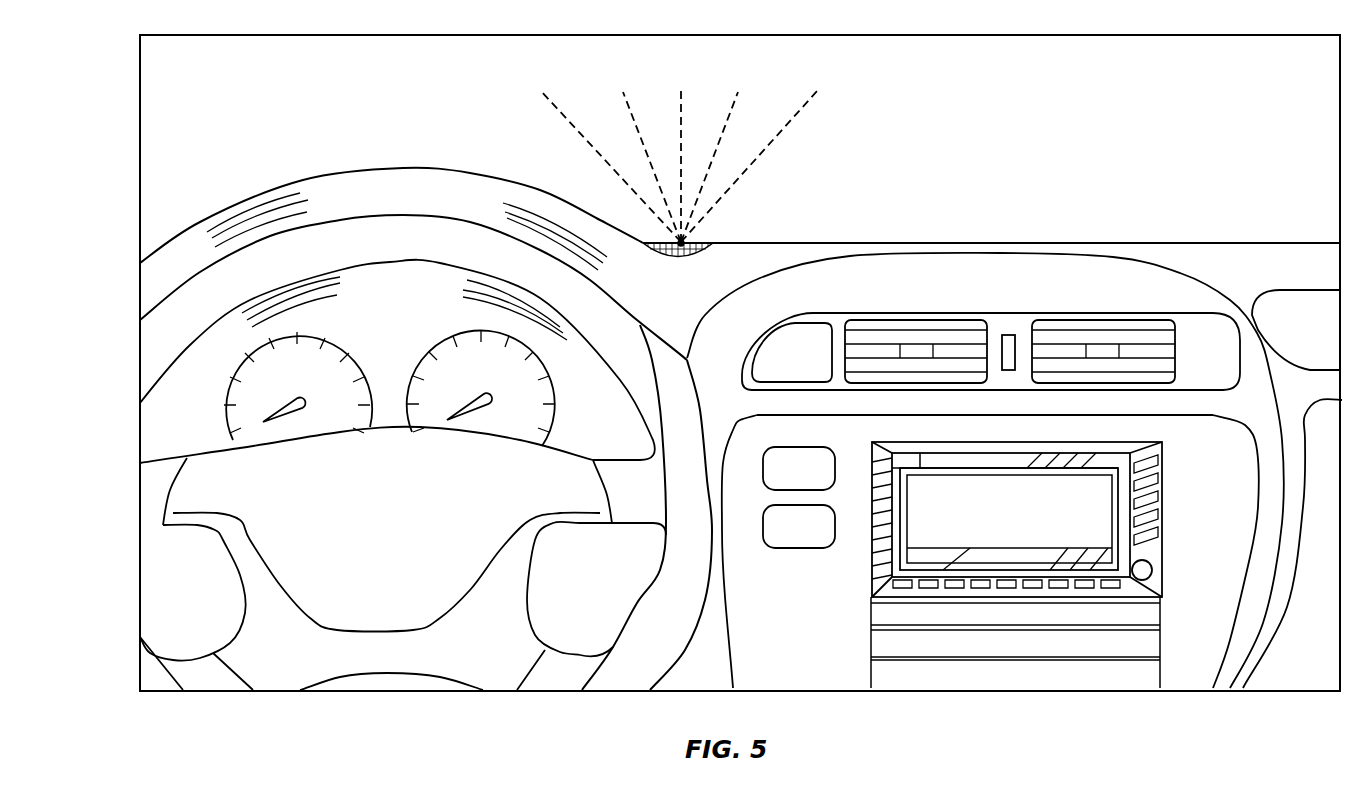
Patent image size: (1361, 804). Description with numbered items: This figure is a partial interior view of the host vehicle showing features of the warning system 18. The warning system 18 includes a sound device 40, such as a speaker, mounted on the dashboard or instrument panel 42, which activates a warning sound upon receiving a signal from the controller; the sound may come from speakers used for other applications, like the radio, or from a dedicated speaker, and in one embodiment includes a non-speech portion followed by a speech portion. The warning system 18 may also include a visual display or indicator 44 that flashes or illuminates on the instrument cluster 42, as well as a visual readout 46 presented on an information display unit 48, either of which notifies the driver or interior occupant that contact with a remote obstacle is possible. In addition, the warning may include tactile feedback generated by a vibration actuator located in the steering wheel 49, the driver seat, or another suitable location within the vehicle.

The warning system 18 is at (905, 162).
The sound device 40 is at (681, 246).
The instrument panel 42 is at (608, 434).
The visual display or indicator 44 is at (387, 300).
The visual readout 46 is at (1057, 497).
The information display unit 48 is at (1143, 540).
The steering wheel 49 is at (402, 214).